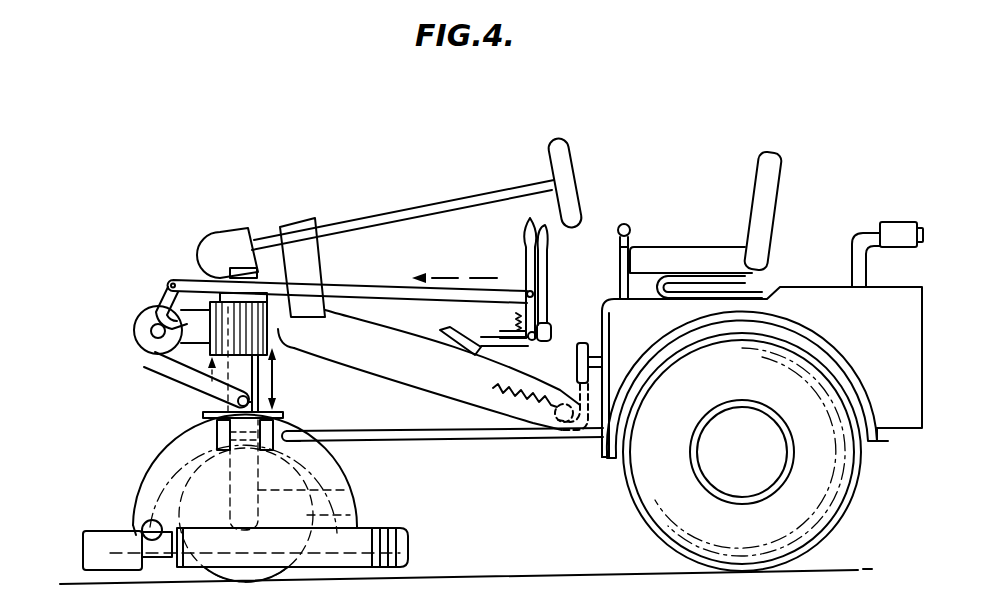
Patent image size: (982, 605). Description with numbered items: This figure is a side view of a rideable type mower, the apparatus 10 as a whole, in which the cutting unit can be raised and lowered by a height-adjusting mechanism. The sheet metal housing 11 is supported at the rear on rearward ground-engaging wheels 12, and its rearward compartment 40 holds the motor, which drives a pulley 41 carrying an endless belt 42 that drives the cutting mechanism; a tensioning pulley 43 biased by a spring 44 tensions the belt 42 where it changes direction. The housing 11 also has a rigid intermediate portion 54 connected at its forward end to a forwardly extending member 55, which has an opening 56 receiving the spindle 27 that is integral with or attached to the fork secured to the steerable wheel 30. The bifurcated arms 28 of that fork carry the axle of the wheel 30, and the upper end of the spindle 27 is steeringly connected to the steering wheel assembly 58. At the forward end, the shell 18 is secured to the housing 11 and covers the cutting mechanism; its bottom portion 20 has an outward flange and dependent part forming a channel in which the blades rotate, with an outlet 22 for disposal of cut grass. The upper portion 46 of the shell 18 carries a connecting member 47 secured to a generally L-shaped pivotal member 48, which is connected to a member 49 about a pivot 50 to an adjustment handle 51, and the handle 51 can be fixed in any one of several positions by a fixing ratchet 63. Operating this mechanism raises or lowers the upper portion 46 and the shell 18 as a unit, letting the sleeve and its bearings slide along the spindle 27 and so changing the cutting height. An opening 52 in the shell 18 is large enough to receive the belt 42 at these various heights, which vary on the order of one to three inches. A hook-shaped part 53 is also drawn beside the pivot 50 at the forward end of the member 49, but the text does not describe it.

The apparatus 10 is at (440, 177).
The housing 11 is at (893, 325).
The rearward ground-engaging wheels 12 is at (817, 517).
The shell 18 is at (147, 472).
The bottom portion 20 is at (83, 548).
The outlet 22 is at (150, 522).
The spindle 27 is at (279, 383).
The bifurcated arms 28 is at (346, 486).
The steerable wheel 30 is at (349, 512).
The rearward compartment 40 is at (887, 430).
The pulley 41 is at (583, 343).
The endless belt 42 is at (434, 436).
The tensioning pulley 43 is at (559, 428).
The spring 44 is at (532, 411).
The upper portion 46 is at (204, 415).
The connecting member 47 is at (284, 415).
The L-shaped pivotal member 48 is at (150, 385).
The member 49 is at (353, 292).
The pivot 50 is at (134, 331).
The adjustment handle 51 is at (525, 263).
The opening 52 is at (332, 441).
The latch hook 53 is at (161, 310).
The rigid intermediate portion 54 is at (471, 376).
The forwardly extending member 55 is at (288, 348).
The opening 56 is at (220, 268).
The steering wheel assembly 58 is at (331, 219).
The fixing ratchet 63 is at (550, 312).